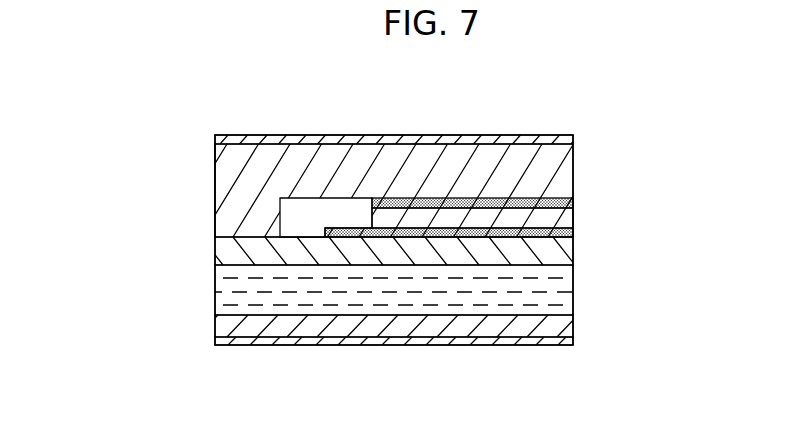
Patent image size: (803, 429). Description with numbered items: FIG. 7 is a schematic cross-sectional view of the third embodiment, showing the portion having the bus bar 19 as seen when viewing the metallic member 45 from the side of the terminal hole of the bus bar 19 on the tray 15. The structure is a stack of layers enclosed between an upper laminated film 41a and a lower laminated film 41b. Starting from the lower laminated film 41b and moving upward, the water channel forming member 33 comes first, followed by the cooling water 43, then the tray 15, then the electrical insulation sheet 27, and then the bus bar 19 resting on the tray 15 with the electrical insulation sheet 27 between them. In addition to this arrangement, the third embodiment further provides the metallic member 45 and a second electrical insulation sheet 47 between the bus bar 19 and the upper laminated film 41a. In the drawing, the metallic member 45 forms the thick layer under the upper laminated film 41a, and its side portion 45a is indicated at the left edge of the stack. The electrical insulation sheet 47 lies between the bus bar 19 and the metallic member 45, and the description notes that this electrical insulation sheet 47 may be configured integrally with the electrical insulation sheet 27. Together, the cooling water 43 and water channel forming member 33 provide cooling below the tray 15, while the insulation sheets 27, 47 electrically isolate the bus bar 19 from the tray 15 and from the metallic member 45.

The upper laminated film 41a is at (420, 135).
The lower laminated film 41b is at (417, 345).
The metallic member 45 is at (573, 163).
The side portion of sealing resin layer 45a is at (217, 217).
The electrical insulation sheet 47 is at (570, 200).
The bus bar 19 is at (567, 220).
The electrical insulation sheet 27 is at (573, 237).
The tray 15 is at (573, 255).
The cooling water 43 is at (573, 297).
The water channel forming member 33 is at (573, 328).